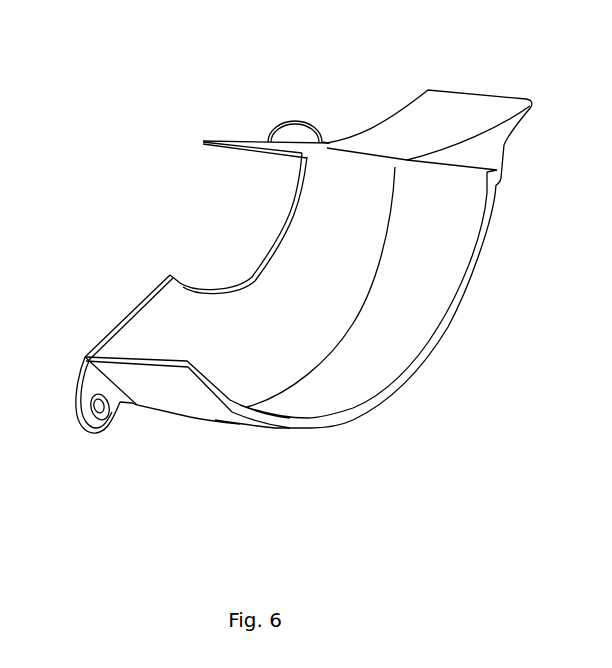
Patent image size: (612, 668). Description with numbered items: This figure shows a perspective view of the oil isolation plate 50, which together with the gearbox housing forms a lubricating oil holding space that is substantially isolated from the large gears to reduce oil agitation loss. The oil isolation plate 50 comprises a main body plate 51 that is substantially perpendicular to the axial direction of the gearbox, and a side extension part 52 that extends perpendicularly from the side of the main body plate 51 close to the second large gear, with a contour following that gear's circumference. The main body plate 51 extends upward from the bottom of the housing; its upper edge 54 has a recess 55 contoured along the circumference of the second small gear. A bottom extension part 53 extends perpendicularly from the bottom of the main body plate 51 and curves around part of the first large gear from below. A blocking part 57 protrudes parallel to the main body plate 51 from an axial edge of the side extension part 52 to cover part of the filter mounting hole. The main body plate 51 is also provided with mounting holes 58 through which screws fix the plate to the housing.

The oil isolation plate 50 is at (98, 135).
The main body plate 51 is at (163, 313).
The side extension part 52 is at (358, 133).
The bottom extension part 53 is at (385, 375).
The upper edge 54 is at (120, 323).
The recess 55 is at (252, 275).
The blocking part 57 is at (289, 118).
The mounting holes 58 is at (107, 423).